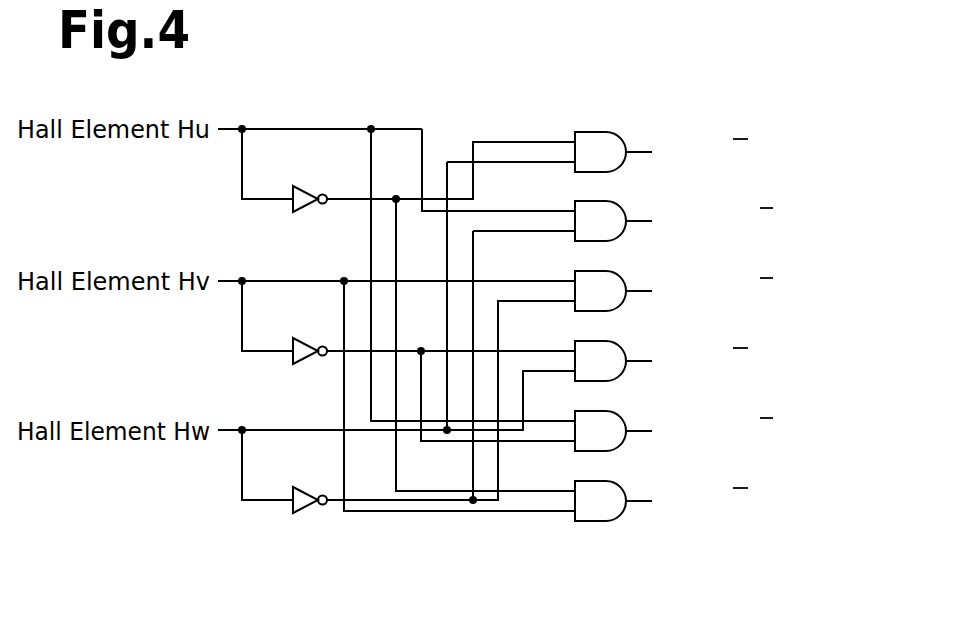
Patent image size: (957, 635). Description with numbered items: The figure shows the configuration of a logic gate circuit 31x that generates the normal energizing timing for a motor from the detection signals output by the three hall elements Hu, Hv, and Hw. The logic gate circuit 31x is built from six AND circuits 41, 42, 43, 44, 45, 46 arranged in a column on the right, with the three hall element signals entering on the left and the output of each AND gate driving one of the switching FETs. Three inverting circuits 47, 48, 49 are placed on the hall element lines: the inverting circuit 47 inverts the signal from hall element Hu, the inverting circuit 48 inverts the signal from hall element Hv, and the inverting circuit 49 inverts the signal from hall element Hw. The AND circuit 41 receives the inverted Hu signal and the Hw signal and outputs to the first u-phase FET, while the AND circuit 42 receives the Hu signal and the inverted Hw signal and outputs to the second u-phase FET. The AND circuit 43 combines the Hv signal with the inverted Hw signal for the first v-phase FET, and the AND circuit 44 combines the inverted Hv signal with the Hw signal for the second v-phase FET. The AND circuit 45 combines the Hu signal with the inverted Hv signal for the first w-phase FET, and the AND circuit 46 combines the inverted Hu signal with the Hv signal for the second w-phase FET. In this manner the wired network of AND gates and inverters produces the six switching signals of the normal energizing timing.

The logic gate circuit 31x is at (637, 97).
The AND circuit 41 is at (589, 132).
The AND circuit 42 is at (589, 201).
The AND circuit 43 is at (589, 271).
The AND circuit 44 is at (589, 341).
The AND circuit 45 is at (589, 411).
The AND circuit 46 is at (589, 481).
The inverting circuit 47 is at (298, 185).
The inverting circuit 48 is at (298, 337).
The inverting circuit 49 is at (298, 486).